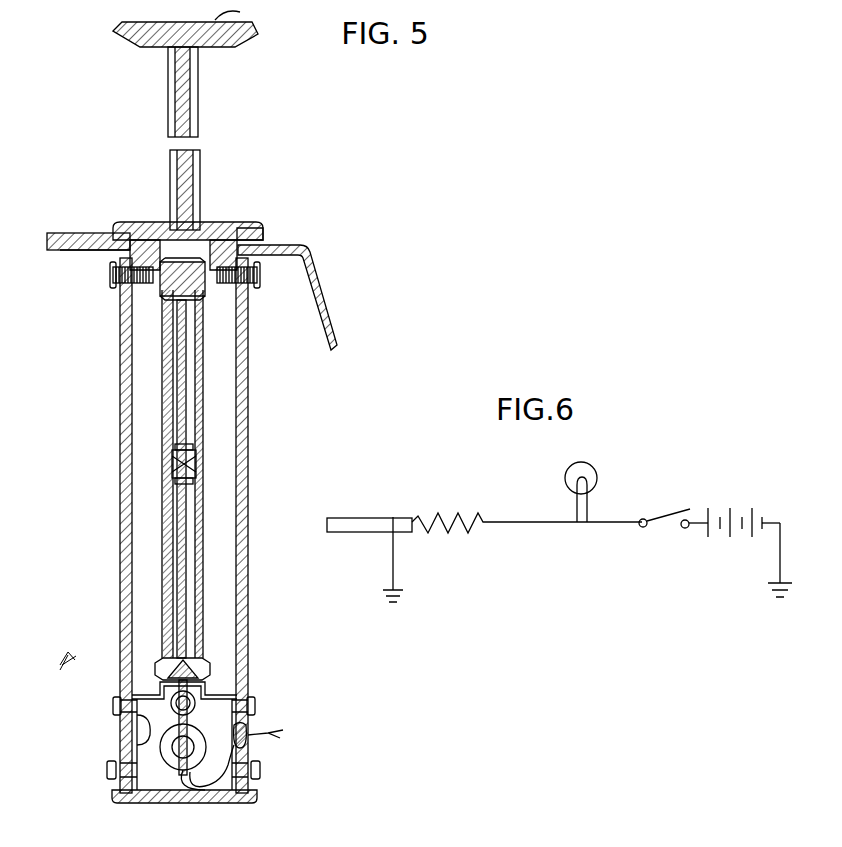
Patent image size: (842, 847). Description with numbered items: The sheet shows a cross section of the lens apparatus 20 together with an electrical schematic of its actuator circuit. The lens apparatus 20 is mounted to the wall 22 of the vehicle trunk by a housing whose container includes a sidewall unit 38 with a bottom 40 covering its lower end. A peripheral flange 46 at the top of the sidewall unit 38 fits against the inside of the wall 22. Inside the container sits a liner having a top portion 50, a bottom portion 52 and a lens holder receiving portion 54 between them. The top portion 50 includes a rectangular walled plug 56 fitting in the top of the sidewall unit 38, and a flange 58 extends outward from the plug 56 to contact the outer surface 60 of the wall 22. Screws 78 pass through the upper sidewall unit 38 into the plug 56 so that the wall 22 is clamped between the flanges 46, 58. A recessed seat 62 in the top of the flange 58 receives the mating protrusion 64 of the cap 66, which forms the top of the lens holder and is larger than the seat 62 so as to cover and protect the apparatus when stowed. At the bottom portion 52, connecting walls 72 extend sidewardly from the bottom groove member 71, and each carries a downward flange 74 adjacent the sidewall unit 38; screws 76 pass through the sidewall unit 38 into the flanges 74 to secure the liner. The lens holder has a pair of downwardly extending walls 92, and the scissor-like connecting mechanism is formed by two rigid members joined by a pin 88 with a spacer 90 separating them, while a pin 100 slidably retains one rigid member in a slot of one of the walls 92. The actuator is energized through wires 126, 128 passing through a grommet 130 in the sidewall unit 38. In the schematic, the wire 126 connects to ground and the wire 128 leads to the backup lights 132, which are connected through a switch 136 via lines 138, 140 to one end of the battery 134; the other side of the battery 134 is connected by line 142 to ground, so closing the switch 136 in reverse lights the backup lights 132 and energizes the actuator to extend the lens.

In FIG. 5, the lens apparatus 20 is at (262, 410).
In FIG. 5, the wall 22 is at (283, 252).
In FIG. 5, the sidewall unit 38 is at (248, 574).
In FIG. 5, the bottom 40 is at (204, 803).
In FIG. 5, the peripheral flange 46 is at (100, 252).
In FIG. 5, the top portion 50 is at (255, 228).
In FIG. 5, the bottom portion 52 is at (220, 676).
In FIG. 5, the lens holder receiving portion 54 is at (208, 480).
In FIG. 5, the rectangular walled plug 56 is at (199, 222).
In FIG. 5, the flange 58 is at (150, 255).
In FIG. 5, the outer surface 60 is at (70, 232).
In FIG. 5, the recessed seat 62 is at (143, 222).
In FIG. 5, the protrusion 64 is at (160, 47).
In FIG. 5, the cap 66 is at (233, 14).
In FIG. 5, the bottom groove member 71 is at (170, 660).
In FIG. 5, the connecting walls 72 is at (130, 681).
In FIG. 5, the flange 74 is at (137, 740).
In FIG. 5, the screws 76 is at (253, 698).
In FIG. 5, the screws 78 is at (115, 278).
In FIG. 5, the pin 88 is at (172, 463).
In FIG. 5, the spacer 90 is at (183, 446).
In FIG. 5, the walls 92 is at (205, 300).
In FIG. 6, the pin 100 is at (373, 518).
In FIG. 5, the wire 126 is at (268, 745).
In FIG. 6, the wire 126 is at (393, 545).
In FIG. 5, the wire 128 is at (283, 738).
In FIG. 6, the wire 128 is at (542, 525).
In FIG. 5, the grommet 130 is at (250, 728).
In FIG. 6, the backup lights 132 is at (592, 464).
In FIG. 6, the battery 134 is at (732, 503).
In FIG. 6, the switch 136 is at (667, 512).
In FIG. 6, the line 138 is at (611, 520).
In FIG. 6, the line 140 is at (688, 530).
In FIG. 6, the line 142 is at (778, 545).